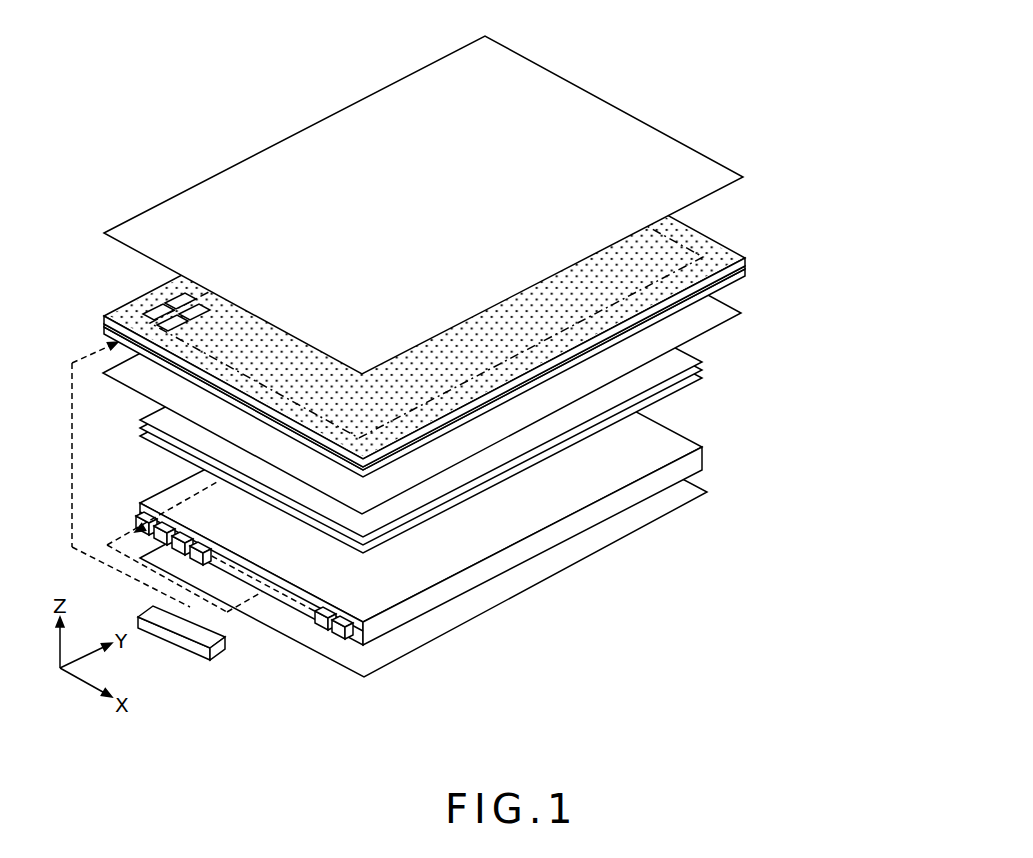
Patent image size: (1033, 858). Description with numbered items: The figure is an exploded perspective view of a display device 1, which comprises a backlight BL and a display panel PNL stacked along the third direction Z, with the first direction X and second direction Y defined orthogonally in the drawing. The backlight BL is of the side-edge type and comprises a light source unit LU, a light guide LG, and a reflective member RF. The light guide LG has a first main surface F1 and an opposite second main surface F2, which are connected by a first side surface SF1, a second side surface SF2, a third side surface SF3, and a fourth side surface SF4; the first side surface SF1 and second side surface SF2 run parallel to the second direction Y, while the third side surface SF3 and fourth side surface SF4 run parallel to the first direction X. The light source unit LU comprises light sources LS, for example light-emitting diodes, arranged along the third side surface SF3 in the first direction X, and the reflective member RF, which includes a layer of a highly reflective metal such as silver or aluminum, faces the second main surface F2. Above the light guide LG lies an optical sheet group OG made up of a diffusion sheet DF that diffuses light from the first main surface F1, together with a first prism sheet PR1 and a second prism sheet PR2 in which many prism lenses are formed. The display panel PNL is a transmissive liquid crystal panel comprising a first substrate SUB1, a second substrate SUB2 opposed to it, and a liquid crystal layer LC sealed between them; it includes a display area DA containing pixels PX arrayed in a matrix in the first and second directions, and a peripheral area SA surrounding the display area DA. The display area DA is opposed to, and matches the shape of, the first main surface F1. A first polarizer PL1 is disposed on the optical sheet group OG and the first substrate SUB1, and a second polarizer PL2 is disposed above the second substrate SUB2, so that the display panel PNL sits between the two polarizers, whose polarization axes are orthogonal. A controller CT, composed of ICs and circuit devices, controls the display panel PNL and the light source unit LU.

The display device 1 is at (190, 140).
The second polarizer PL2 is at (714, 162).
The display panel PNL is at (487, 296).
The second substrate SUB2 is at (746, 260).
The liquid crystal layer LC is at (748, 268).
The first substrate SUB1 is at (745, 276).
The display area DA is at (653, 250).
The peripheral area SA is at (720, 258).
The pixels PX is at (160, 312).
The first polarizer PL1 is at (742, 314).
The optical sheet group OG is at (492, 399).
The second prism sheet PR2 is at (704, 360).
The first prism sheet PR1 is at (706, 368).
The diffusion sheet DF is at (706, 378).
The backlight BL is at (443, 544).
The light guide LG is at (443, 525).
The reflective member RF is at (420, 652).
The light sources LS is at (230, 602).
The light source unit LU is at (244, 617).
The controller CT is at (178, 640).
The first side surface SF1 is at (467, 584).
The second side surface SF2 is at (167, 498).
The third side surface SF3 is at (258, 588).
The fourth side surface SF4 is at (680, 446).
The first main surface F1 is at (518, 507).
The second main surface F2 is at (518, 547).